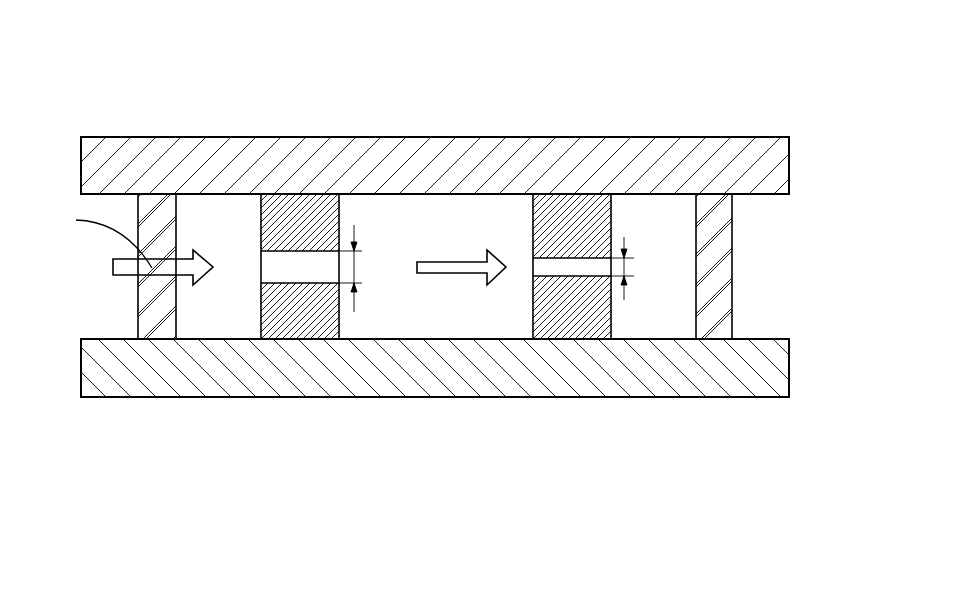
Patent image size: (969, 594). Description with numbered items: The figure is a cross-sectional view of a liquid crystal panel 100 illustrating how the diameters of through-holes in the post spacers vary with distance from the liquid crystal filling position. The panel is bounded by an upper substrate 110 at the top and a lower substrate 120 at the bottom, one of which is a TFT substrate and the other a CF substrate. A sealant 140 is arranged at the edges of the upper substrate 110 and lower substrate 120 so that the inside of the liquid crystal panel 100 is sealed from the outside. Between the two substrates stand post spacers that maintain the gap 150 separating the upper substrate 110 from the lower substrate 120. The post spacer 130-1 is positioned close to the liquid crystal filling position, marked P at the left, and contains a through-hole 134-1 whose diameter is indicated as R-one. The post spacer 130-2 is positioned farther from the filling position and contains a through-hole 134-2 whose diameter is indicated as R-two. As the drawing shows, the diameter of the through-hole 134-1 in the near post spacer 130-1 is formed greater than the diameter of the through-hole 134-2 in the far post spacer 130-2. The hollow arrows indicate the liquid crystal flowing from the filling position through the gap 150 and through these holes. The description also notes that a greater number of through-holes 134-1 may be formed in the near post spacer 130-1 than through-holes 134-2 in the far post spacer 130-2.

The liquid crystal panel 100 is at (150, 90).
The upper substrate 110 is at (789, 160).
The lower substrate 120 is at (789, 365).
The sealant 140 is at (732, 233).
The post spacer 130-1 is at (281, 210).
The through-hole 134-1 is at (334, 264).
The post spacer 130-2 is at (551, 210).
The through-hole 134-2 is at (601, 264).
The gap 150 is at (232, 323).